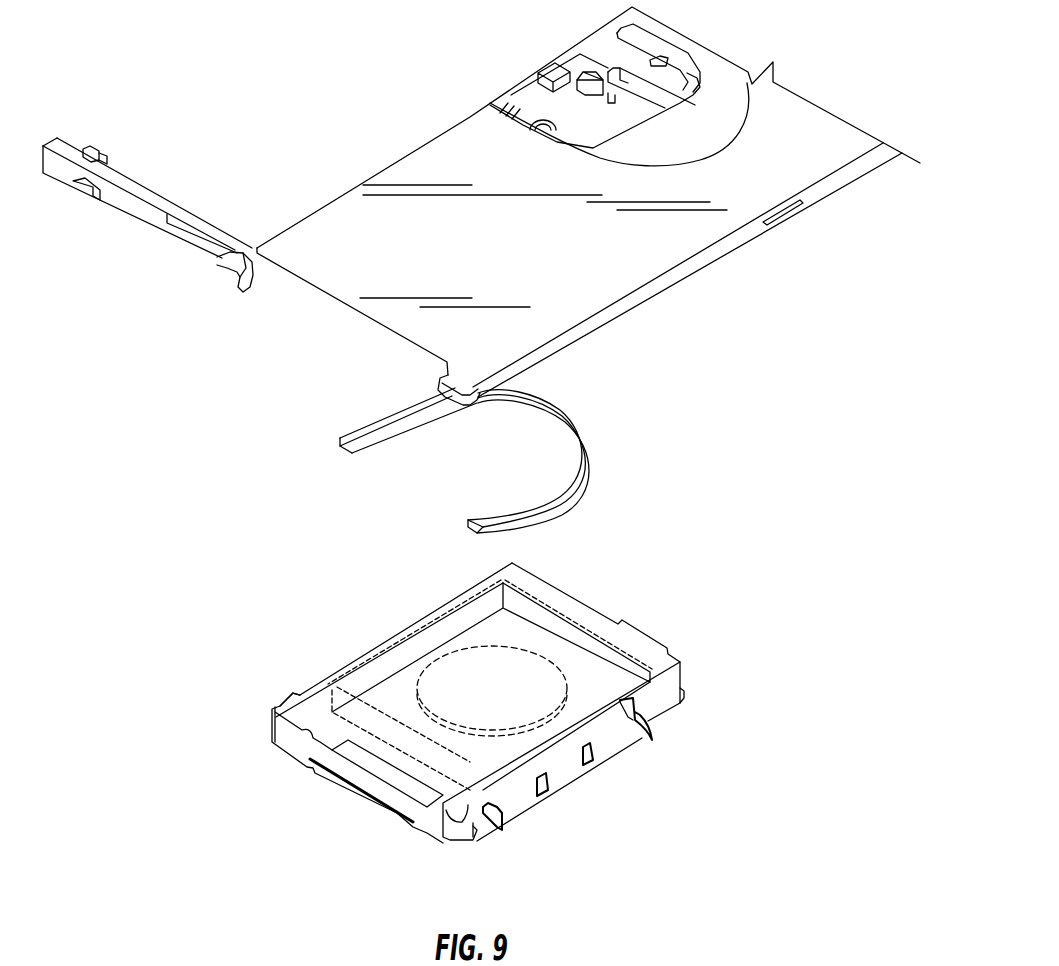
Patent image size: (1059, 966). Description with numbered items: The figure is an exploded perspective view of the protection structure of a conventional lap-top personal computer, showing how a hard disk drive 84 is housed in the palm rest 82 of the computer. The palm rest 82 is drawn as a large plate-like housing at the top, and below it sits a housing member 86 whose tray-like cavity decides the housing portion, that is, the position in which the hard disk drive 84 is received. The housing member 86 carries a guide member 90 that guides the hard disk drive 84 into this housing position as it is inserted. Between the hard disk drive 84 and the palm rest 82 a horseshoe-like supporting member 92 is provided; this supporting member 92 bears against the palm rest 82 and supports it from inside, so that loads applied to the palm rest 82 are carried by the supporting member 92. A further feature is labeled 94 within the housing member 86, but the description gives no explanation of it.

The palm rest 82 is at (597, 295).
The hard disk drive 84 is at (523, 612).
The housing member 86 is at (673, 613).
The guide member 90 is at (407, 635).
The supporting member 92 is at (577, 445).
The cylindrical recess 94 is at (513, 730).